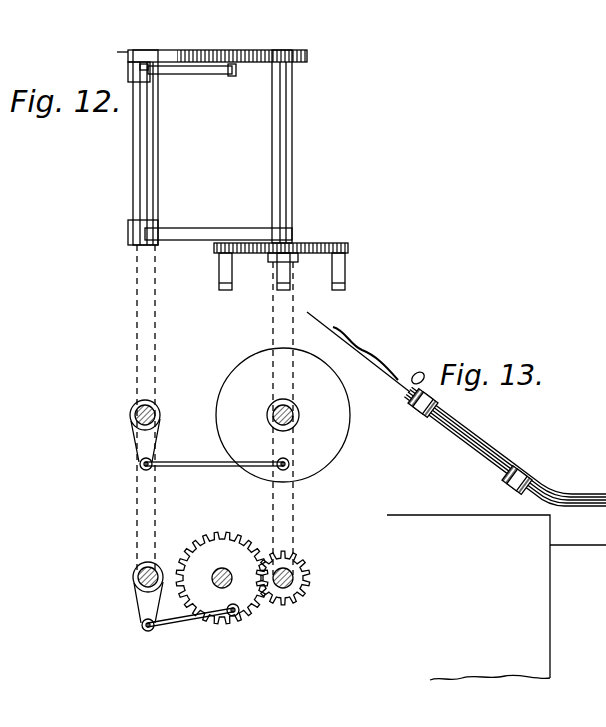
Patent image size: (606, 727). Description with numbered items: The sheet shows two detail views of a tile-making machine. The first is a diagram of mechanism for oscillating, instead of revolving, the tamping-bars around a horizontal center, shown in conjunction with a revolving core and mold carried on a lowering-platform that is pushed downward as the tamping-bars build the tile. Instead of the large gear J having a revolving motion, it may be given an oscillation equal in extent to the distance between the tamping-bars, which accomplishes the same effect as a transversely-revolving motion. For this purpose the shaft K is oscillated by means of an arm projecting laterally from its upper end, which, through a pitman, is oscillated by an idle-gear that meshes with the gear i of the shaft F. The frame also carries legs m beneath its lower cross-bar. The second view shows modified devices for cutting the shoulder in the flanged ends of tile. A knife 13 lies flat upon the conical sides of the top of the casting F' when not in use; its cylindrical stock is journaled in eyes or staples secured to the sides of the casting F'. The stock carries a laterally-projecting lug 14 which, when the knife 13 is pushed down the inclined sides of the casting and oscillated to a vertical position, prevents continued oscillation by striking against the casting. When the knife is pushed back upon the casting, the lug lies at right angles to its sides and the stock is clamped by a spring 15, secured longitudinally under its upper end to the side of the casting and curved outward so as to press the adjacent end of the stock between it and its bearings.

In FIG. 12, the shaft F is at (225, 323).
In FIG. 12, the large gear J is at (300, 248).
In FIG. 12, the legs m is at (219, 273).
In FIG. 12, the shaft K is at (138, 571).
In FIG. 12, the gear i is at (243, 578).
In FIG. 13, the casting F' is at (456, 409).
In FIG. 13, the spring 15 is at (365, 353).
In FIG. 13, the lug 14 is at (420, 378).
In FIG. 13, the knife 13 is at (496, 597).